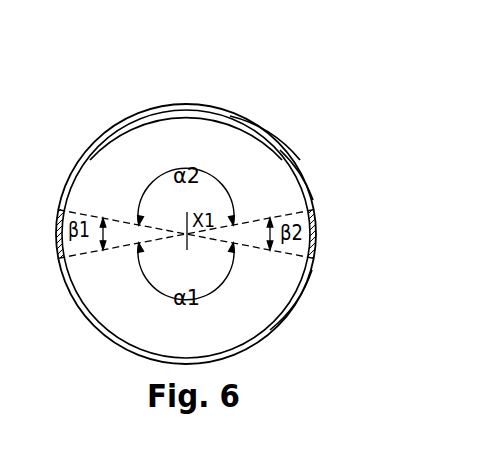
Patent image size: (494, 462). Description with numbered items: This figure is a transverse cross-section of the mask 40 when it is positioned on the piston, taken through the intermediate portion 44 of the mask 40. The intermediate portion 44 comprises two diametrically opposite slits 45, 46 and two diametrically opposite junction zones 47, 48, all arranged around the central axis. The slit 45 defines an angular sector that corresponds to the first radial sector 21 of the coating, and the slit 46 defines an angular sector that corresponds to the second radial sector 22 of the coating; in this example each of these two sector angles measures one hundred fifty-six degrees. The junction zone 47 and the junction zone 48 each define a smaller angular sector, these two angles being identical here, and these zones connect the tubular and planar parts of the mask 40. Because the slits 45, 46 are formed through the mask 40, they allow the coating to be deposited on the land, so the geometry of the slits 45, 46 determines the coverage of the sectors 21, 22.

The radial sector of the coating 21 is at (110, 340).
The radial sector of the coating 22 is at (140, 112).
The mask 40 is at (266, 131).
The intermediate portion 44 is at (199, 96).
The slit 45 is at (298, 306).
The slit 46 is at (305, 170).
The junction zone 47 is at (60, 245).
The junction zone 48 is at (317, 228).